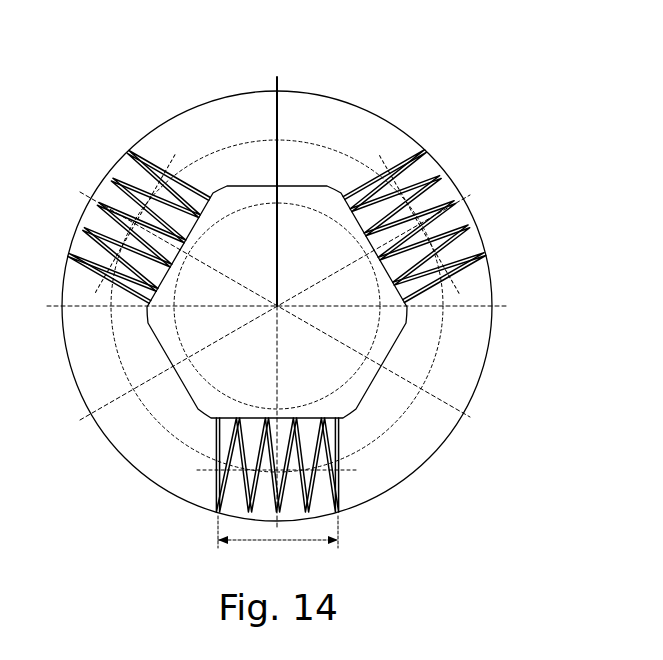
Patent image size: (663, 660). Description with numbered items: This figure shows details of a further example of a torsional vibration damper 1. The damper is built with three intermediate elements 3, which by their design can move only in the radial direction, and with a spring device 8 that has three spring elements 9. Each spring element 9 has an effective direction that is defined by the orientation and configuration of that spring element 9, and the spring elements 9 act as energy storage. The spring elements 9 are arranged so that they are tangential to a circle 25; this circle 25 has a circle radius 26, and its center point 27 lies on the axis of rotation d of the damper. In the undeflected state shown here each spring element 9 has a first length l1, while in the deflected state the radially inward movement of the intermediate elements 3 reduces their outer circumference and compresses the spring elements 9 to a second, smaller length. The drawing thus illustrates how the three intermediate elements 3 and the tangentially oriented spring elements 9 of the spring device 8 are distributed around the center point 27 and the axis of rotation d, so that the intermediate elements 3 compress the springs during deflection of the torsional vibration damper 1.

The torsional vibration damper 1 is at (452, 118).
The intermediate element 3 is at (303, 103).
The spring device 8 is at (452, 190).
The spring element 9 is at (83, 214).
The circle 25 is at (150, 415).
The circle radius 26 is at (288, 222).
The center point 27 is at (278, 307).
The axis of rotation d is at (276, 310).
The first length l1 is at (278, 540).